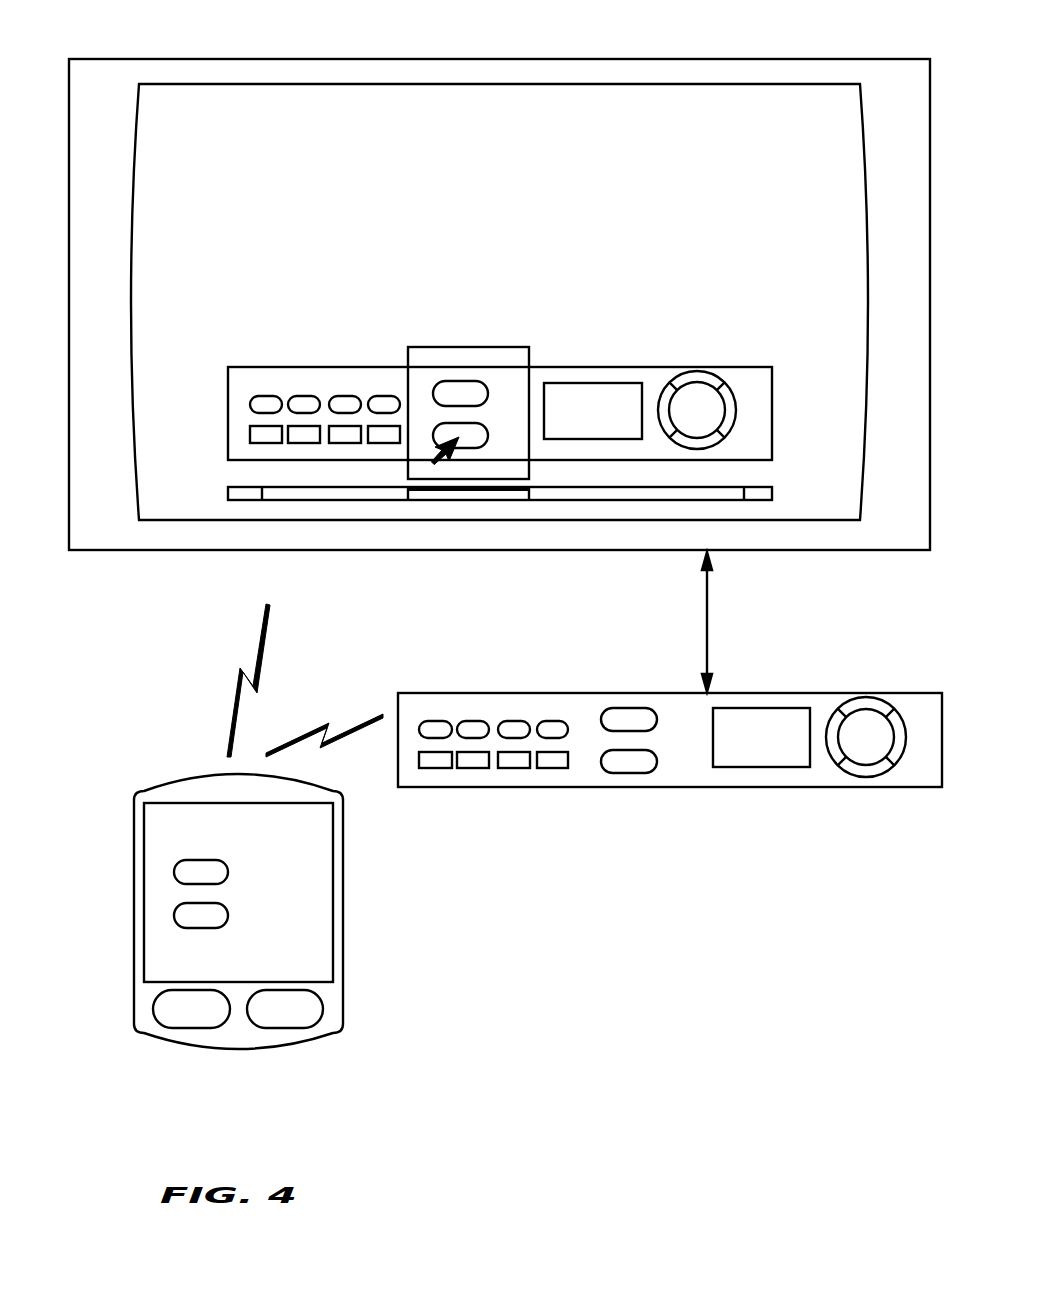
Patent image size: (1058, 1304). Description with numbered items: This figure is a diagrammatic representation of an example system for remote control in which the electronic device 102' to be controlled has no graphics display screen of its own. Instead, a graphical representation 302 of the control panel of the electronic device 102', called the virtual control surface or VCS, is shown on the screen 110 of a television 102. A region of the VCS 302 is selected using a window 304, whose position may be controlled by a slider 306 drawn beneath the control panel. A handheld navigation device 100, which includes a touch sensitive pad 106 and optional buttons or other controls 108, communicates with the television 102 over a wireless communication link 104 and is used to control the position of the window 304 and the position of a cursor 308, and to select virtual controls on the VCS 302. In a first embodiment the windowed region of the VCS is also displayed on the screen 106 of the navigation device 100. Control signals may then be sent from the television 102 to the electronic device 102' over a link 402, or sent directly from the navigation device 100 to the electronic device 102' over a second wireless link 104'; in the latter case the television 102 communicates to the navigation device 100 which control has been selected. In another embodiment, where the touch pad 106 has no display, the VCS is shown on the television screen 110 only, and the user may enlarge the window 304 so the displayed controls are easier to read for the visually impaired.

The navigation device 100 is at (210, 1050).
The television 102 is at (499, 282).
The electronic device 102' is at (670, 722).
The wireless communication link 104 is at (221, 680).
The wireless link 104' is at (324, 721).
The touch sensitive pad 106 is at (143, 905).
The buttons 108 is at (153, 1010).
The screen 110 is at (522, 83).
The graphical representation of the control panel 302 is at (361, 366).
The window 304 is at (483, 347).
The slider 306 is at (333, 497).
The cursor 308 is at (450, 457).
The link 402 is at (705, 625).